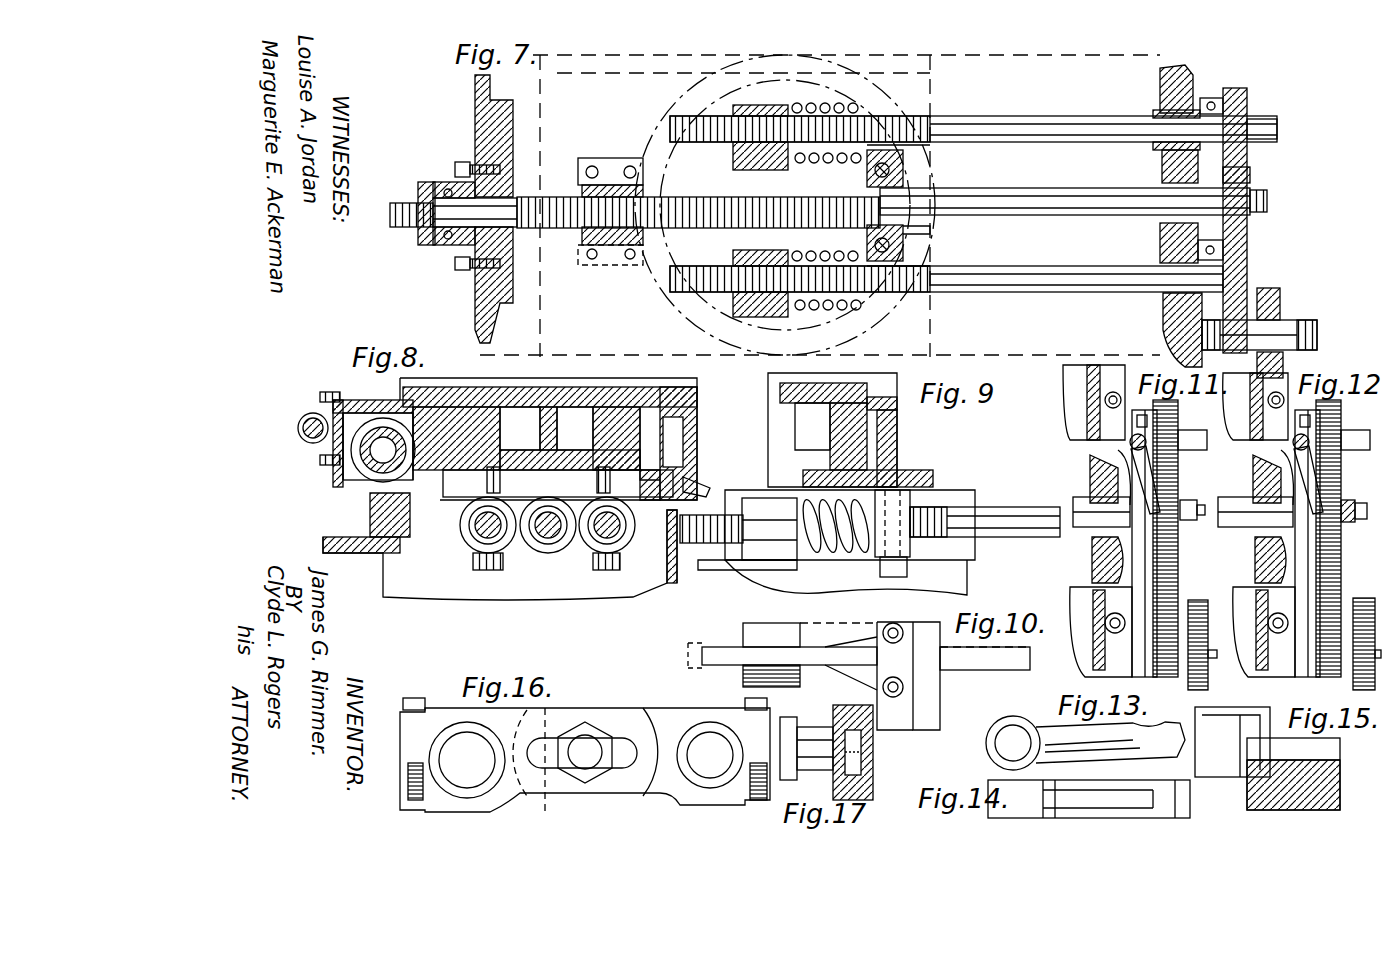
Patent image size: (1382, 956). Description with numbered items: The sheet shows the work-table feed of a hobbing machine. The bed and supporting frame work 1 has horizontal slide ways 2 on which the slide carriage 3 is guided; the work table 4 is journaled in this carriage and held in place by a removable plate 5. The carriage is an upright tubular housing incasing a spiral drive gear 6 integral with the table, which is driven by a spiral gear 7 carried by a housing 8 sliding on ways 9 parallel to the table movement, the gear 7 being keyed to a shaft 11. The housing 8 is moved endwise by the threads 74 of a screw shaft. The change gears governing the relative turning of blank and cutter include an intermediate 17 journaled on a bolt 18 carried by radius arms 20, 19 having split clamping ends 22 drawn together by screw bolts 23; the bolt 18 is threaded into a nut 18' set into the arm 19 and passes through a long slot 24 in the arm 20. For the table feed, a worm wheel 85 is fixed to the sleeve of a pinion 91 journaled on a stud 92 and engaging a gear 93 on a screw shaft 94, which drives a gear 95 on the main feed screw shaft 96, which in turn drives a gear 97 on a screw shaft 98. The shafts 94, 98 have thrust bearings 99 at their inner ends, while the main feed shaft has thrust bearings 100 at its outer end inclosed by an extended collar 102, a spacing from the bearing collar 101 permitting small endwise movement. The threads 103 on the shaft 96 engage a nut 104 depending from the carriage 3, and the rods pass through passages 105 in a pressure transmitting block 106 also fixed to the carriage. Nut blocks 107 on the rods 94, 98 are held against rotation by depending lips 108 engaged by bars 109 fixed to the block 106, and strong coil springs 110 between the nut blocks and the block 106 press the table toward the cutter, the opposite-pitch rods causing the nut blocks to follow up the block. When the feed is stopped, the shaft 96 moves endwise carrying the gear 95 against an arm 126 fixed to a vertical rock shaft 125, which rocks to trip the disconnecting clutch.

In FIG. 7, the bed and supporting frame work 1 is at (515, 290).
In FIG. 8, the bed and supporting frame work 1 is at (395, 552).
In FIG. 11, the bed and supporting frame work 1 is at (1092, 570).
In FIG. 8, the horizontal slide ways 2 is at (655, 497).
In FIG. 8, the slide carriage 3 is at (697, 430).
In FIG. 8, the work table 4 is at (625, 390).
In FIG. 8, the removable plate 5 is at (468, 516).
In FIG. 8, the spiral drive gear 6 is at (700, 460).
In FIG. 8, the spiral gear 7 is at (350, 452).
In FIG. 8, the housing 8 is at (360, 400).
In FIG. 8, the ways 9 is at (365, 415).
In FIG. 8, the shaft 11 is at (388, 472).
In FIG. 16, the intermediate 17 is at (547, 812).
In FIG. 16, the bolt 18 is at (585, 770).
In FIG. 17, the nut 18' is at (854, 752).
In FIG. 16, the radius arm 19 is at (672, 795).
In FIG. 16, the radius arm 20 is at (530, 792).
In FIG. 16, the split clamping ends 22 is at (405, 762).
In FIG. 16, the screw bolts 23 is at (410, 700).
In FIG. 16, the long slot 24 is at (612, 740).
In FIG. 8, the threads 74 is at (298, 428).
In FIG. 7, the worm wheel 85 is at (1280, 300).
In FIG. 11, the worm wheel 85 is at (1212, 592).
In FIG. 12, the worm wheel 85 is at (1368, 592).
In FIG. 7, the pinion 91 is at (1283, 362).
In FIG. 7, the stud 92 is at (1290, 328).
In FIG. 7, the gear 93 is at (1250, 260).
In FIG. 7, the screw shaft 94 is at (1007, 292).
In FIG. 8, the screw shaft 94 is at (480, 545).
In FIG. 9, the screw shaft 94 is at (1003, 538).
In FIG. 10, the screw shaft 94 is at (995, 670).
In FIG. 7, the gear 95 is at (1250, 176).
In FIG. 12, the gear 95 is at (1335, 500).
In FIG. 15, the gear 95 is at (1335, 790).
In FIG. 7, the main feed screw shaft 96 is at (1020, 190).
In FIG. 8, the main feed screw shaft 96 is at (552, 545).
In FIG. 11, the main feed screw shaft 96 is at (1078, 528).
In FIG. 12, the main feed screw shaft 96 is at (1232, 528).
In FIG. 7, the gear 97 is at (1248, 100).
In FIG. 7, the screw shaft 98 is at (1060, 118).
In FIG. 8, the screw shaft 98 is at (615, 535).
In FIG. 7, the thrust bearings 99 is at (1210, 97).
In FIG. 7, the thrust bearings 100 is at (448, 182).
In FIG. 7, the bearing collar 101 is at (1162, 170).
In FIG. 7, the extended collar 102 is at (432, 246).
In FIG. 7, the threads 103 is at (695, 197).
In FIG. 7, the nut 104 is at (600, 160).
In FIG. 7, the passages 105 is at (905, 263).
In FIG. 7, the pressure transmitting block 106 is at (868, 232).
In FIG. 9, the pressure transmitting block 106 is at (910, 552).
In FIG. 10, the pressure transmitting block 106 is at (914, 718).
In FIG. 7, the nut blocks 107 is at (762, 106).
In FIG. 10, the nut blocks 107 is at (745, 686).
In FIG. 8, the depending lips 108 is at (593, 568).
In FIG. 9, the depending lips 108 is at (762, 565).
In FIG. 10, the depending lips 108 is at (775, 647).
In FIG. 9, the bars 109 is at (832, 558).
In FIG. 10, the bars 109 is at (725, 652).
In FIG. 7, the coil springs 110 is at (845, 113).
In FIG. 9, the coil springs 110 is at (880, 472).
In FIG. 11, the vertical rock shaft 125 is at (1090, 465).
In FIG. 12, the vertical rock shaft 125 is at (1256, 458).
In FIG. 11, the arm 126 is at (1160, 489).
In FIG. 13, the arm 126 is at (1140, 724).
In FIG. 14, the arm 126 is at (1093, 790).